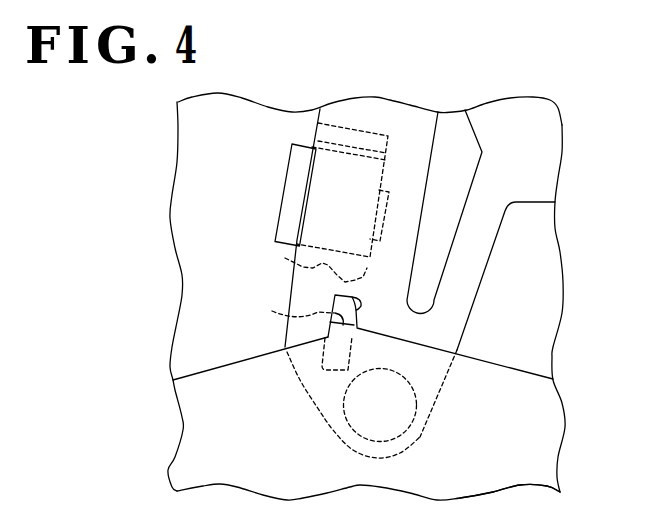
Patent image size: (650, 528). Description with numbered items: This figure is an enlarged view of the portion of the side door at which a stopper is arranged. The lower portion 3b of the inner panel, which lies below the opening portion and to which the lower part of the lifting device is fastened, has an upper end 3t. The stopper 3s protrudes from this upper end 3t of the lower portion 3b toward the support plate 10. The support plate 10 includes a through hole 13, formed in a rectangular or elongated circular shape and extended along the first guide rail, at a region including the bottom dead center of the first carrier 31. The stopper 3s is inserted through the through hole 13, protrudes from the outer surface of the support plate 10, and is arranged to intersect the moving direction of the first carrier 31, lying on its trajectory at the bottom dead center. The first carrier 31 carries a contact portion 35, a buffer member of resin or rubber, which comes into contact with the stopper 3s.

The first carrier 31 is at (284, 196).
The contact portion 35 is at (285, 258).
The stopper 3s is at (287, 311).
The through hole 13 is at (361, 299).
The support plate 10 is at (492, 268).
The upper end 3t is at (523, 367).
The lower portion 3b is at (545, 419).